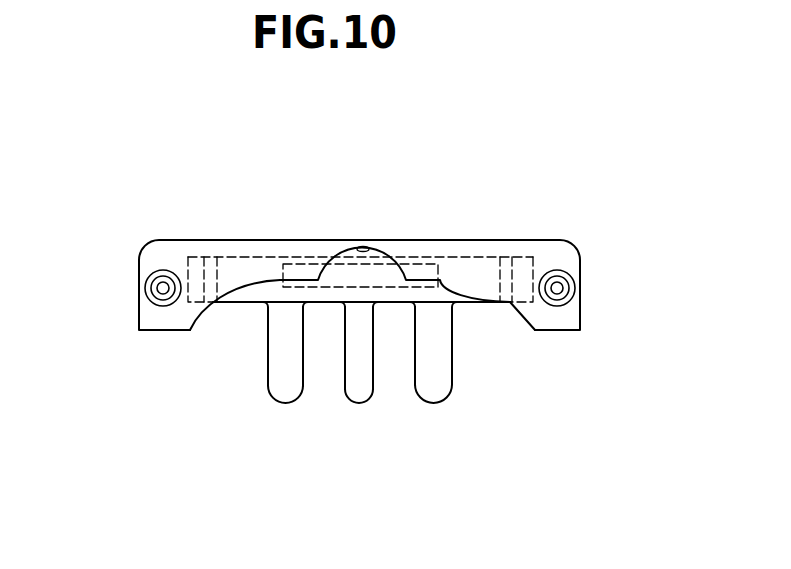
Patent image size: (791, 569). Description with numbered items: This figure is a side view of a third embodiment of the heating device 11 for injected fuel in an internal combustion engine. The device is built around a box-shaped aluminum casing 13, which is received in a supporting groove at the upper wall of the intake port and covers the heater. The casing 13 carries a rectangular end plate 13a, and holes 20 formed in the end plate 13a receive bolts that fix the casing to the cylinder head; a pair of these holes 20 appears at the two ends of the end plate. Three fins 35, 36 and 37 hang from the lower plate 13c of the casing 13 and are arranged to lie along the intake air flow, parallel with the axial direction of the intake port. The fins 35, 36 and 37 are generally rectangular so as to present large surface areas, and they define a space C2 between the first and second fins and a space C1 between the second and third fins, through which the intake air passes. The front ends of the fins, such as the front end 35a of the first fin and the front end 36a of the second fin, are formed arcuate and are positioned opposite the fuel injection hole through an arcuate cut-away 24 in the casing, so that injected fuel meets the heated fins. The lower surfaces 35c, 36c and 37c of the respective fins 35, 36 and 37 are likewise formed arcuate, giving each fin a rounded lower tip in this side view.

The heating device 11 is at (165, 226).
The casing 13 is at (514, 232).
The end plate 13a is at (237, 256).
The lower plate 13c is at (455, 303).
The holes 20 is at (160, 290).
The cut-away 24 is at (370, 246).
The fin 35 is at (258, 354).
The front end 35a is at (280, 383).
The lower surface 35c is at (287, 403).
The fin 36 is at (344, 390).
The front end 36a is at (358, 328).
The lower surface 36c is at (363, 403).
The fin 37 is at (460, 356).
The lower surface 37c is at (437, 403).
The space C1 is at (395, 355).
The space C2 is at (320, 372).